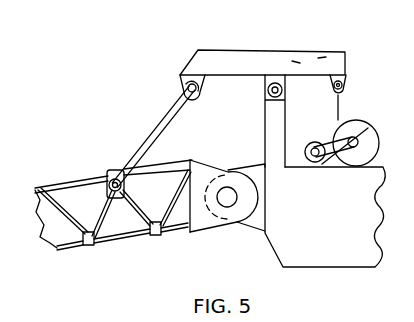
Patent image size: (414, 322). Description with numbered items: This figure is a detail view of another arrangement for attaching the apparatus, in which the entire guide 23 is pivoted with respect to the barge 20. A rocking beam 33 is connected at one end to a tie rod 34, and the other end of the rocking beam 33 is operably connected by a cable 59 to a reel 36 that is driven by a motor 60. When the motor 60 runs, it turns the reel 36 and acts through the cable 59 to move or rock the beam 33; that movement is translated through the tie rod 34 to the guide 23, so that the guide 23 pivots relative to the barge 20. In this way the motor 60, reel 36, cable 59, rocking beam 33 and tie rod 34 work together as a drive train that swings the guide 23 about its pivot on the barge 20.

The barge 20 is at (334, 225).
The guide 23 is at (166, 238).
The rocking beam 33 is at (249, 57).
The tie rod 34 is at (143, 145).
The reel 36 is at (364, 131).
The cable 59 is at (340, 107).
The motor 60 is at (309, 142).